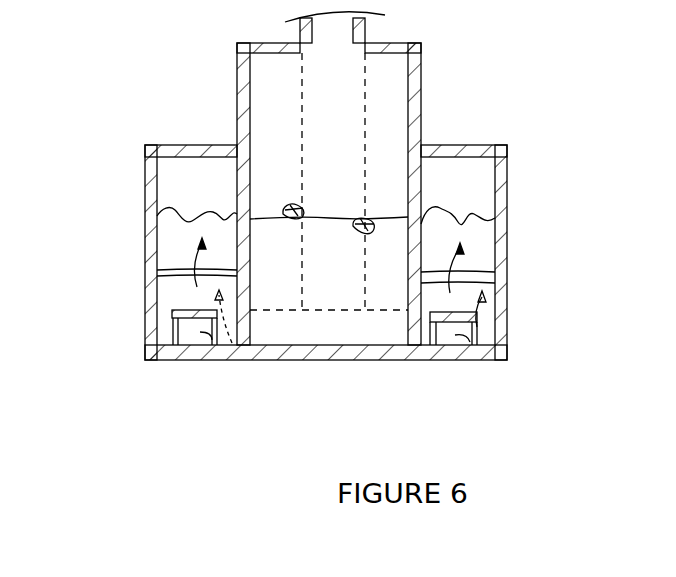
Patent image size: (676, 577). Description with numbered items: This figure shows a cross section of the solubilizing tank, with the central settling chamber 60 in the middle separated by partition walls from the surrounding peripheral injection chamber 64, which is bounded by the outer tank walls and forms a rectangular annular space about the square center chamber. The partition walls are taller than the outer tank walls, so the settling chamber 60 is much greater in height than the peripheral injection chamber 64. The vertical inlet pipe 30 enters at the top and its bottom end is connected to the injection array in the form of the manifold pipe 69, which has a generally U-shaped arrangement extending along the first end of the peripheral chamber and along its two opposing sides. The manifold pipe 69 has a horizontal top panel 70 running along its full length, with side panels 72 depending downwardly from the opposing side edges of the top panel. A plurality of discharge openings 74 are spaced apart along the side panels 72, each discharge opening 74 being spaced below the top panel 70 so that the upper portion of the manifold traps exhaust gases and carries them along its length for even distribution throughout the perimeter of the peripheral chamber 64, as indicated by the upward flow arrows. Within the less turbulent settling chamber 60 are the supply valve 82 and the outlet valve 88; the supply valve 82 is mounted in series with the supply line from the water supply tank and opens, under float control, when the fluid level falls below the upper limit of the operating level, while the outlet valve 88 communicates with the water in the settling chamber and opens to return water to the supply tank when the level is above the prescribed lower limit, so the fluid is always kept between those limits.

The vertical inlet pipe 30 is at (370, 112).
The central settling chamber 60 is at (285, 192).
The peripheral injection chamber 64 is at (187, 183).
The manifold pipe 69 is at (277, 315).
The top panel 70 is at (193, 306).
The side panels 72 is at (176, 322).
The discharge openings 74 is at (167, 338).
The supply valve 82 is at (293, 214).
The outlet valve 88 is at (363, 226).